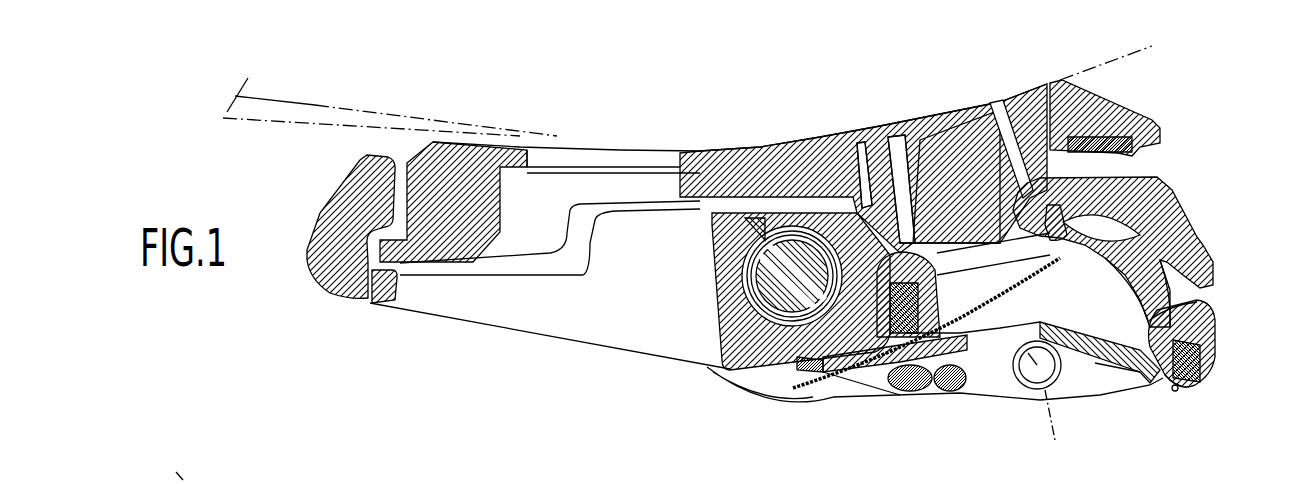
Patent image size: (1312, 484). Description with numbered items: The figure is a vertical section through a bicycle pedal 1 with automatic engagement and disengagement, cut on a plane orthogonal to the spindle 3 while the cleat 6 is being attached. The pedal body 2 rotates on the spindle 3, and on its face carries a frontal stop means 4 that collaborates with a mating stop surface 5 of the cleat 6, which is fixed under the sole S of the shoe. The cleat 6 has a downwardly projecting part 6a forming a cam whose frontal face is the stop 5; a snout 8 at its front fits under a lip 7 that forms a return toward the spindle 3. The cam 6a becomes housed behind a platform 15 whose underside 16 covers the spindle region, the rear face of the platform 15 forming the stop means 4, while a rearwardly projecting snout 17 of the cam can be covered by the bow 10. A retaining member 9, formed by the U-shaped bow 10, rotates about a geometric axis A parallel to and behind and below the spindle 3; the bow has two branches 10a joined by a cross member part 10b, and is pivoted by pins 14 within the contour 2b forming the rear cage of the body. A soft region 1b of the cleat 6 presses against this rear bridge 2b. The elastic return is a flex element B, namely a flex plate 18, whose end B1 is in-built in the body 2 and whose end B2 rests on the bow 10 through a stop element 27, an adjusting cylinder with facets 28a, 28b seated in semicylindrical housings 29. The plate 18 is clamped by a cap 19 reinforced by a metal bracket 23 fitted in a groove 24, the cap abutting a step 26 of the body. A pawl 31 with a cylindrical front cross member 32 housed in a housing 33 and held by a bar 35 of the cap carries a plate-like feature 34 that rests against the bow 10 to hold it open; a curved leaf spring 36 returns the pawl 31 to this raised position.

The bicycle pedal 1 is at (520, 340).
The body 2 is at (728, 343).
The spindle 3 is at (733, 200).
The frontal stop means 4 is at (915, 197).
The mating stop surface 5 is at (882, 210).
The cleat 6 is at (797, 227).
The downwardly projecting part 6a is at (963, 220).
The lip 7 is at (355, 205).
The snout 8 is at (370, 300).
The retaining member 9 is at (1143, 387).
The bow 10 is at (1203, 317).
The branches 10a is at (1062, 400).
The cross member part 10b is at (1147, 283).
The pin 14 is at (1033, 383).
The platform 15 is at (768, 225).
The underside 16 is at (812, 222).
The rearwardly projecting snout 17 is at (1020, 195).
The flex plate 18 is at (960, 393).
The cap 19 is at (890, 397).
The soft region 1b is at (1130, 157).
The metal bracket 23 is at (903, 393).
The groove 24 is at (937, 393).
The step 26 is at (760, 407).
The stop element 27 is at (1180, 380).
The flat facet 28a is at (1202, 315).
The flat facet 28b is at (1157, 383).
The semicylindrical housings 29 is at (1190, 373).
The contour 2b is at (1163, 207).
The pawl 31 is at (1060, 230).
The front cross member 32 is at (848, 205).
The housing 33 is at (852, 397).
The plate-like feature 34 is at (1100, 140).
The bar 35 is at (868, 397).
The leaf spring 36 is at (1100, 372).
The geometric axis of articulation A is at (1047, 432).
The flex element B is at (1092, 360).
The end of flex element B1 is at (800, 400).
The end of flex element B2 is at (1178, 390).
The sole S is at (307, 108).